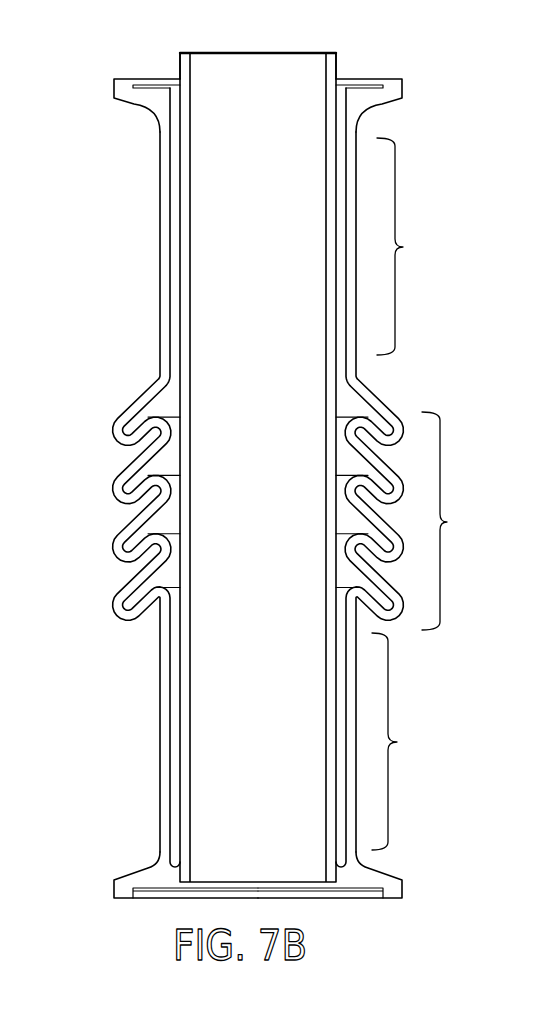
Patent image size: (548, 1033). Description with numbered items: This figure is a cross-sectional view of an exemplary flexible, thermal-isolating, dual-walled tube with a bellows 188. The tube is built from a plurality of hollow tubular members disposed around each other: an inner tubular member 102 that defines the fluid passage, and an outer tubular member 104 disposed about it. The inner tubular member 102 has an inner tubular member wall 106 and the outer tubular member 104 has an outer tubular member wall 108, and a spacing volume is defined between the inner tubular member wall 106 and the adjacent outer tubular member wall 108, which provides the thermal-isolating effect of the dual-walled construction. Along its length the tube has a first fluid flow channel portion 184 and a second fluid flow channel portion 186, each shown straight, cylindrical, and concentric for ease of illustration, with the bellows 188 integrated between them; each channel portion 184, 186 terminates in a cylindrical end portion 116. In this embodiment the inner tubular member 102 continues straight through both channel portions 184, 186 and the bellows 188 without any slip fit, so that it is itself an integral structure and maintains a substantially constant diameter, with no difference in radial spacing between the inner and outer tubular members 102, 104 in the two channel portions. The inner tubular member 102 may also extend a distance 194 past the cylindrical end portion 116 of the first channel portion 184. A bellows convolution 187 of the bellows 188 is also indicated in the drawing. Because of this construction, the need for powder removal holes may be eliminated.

The inner tubular member 102 is at (292, 463).
The outer tubular member 104 is at (267, 481).
The inner tubular member wall 106 is at (274, 480).
The outer tubular member wall 108 is at (363, 364).
The cylindrical end portion 116 is at (402, 89).
The first fluid flow channel portion 184 is at (413, 246).
The second fluid flow channel portion 186 is at (407, 741).
The bellows convolution 187 is at (113, 541).
The bellows 188 is at (455, 521).
The distance 194 is at (338, 68).